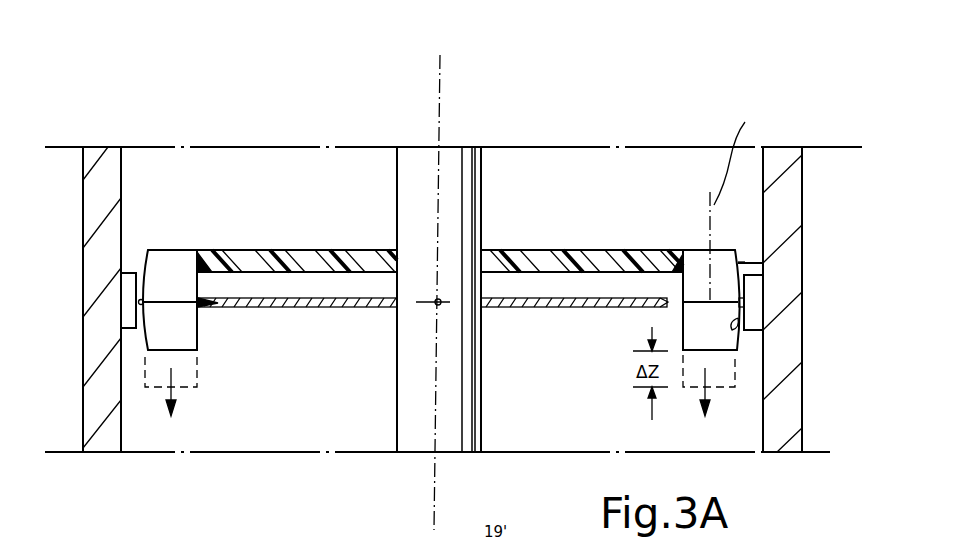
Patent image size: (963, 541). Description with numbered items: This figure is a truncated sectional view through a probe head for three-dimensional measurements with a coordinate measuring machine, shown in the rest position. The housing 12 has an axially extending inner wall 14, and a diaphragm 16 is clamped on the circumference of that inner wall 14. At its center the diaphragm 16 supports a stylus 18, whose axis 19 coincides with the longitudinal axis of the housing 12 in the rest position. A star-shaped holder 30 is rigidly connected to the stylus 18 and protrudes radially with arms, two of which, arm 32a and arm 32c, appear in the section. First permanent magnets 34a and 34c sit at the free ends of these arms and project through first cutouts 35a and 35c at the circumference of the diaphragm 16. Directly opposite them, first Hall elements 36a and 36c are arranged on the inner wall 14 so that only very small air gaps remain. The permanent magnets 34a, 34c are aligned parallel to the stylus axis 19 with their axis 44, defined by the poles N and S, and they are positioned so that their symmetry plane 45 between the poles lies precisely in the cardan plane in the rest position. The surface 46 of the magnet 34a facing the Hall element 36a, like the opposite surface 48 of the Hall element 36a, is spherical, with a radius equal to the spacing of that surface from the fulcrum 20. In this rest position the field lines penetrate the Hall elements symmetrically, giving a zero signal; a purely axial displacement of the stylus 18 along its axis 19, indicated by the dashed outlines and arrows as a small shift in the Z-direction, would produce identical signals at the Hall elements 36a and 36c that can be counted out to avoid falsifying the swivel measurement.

The housing 12 is at (108, 198).
The axially extending inner wall 14 is at (757, 210).
The diaphragm 16 is at (320, 308).
The stylus 18 is at (405, 400).
The axis of the stylus 19 is at (440, 74).
The fulcrum 20 is at (436, 308).
The star-shaped holder 30 is at (520, 250).
The arm 32a is at (582, 218).
The arm 32c is at (278, 264).
The first permanent magnet 34a is at (697, 262).
The first permanent magnet 34c is at (186, 260).
The first cutout 35a is at (666, 305).
The first cutout 35c is at (207, 306).
The first Hall element 36a is at (756, 302).
The first Hall element 36c is at (122, 302).
The axis of the permanent magnet 44 is at (742, 152).
The symmetry plane 45 is at (742, 262).
The surface of the first permanent magnet 46 is at (760, 264).
The surface of the first Hall element 48 is at (737, 322).